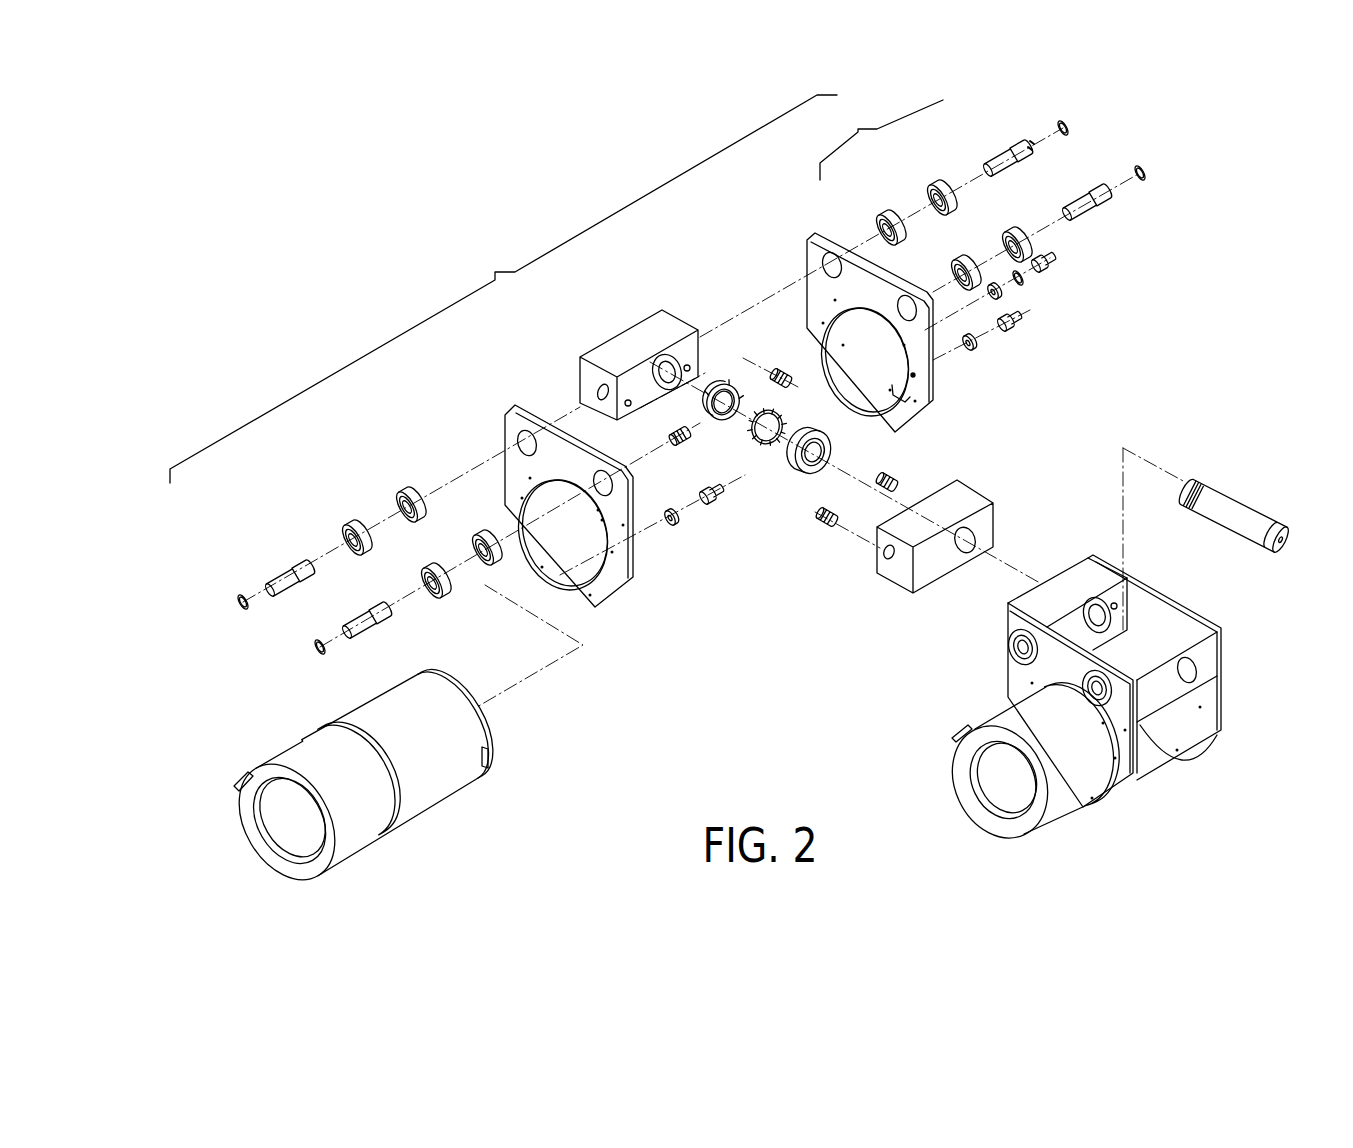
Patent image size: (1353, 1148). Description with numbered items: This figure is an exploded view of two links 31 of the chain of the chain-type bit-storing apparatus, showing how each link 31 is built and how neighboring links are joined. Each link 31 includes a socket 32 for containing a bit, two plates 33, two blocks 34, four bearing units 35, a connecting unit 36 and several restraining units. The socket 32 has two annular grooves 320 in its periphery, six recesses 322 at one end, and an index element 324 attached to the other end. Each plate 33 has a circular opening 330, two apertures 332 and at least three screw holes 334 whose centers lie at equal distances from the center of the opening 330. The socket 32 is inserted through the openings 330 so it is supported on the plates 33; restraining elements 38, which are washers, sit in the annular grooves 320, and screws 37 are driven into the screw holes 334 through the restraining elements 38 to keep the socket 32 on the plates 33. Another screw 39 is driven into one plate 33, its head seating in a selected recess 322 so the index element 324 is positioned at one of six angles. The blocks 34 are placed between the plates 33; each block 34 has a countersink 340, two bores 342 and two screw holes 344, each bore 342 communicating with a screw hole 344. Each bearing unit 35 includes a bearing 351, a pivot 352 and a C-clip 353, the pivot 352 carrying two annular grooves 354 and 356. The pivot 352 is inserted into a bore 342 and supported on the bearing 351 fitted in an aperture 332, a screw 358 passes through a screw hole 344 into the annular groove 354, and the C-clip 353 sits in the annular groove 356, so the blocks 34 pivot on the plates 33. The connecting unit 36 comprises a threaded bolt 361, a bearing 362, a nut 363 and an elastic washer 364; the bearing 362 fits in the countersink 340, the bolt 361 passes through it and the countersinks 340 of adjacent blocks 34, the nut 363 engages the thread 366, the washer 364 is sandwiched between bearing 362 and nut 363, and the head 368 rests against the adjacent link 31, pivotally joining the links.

The link 31 is at (1245, 823).
The socket 32 is at (398, 703).
The annular groove 320 is at (478, 714).
The recess 322 is at (489, 748).
The index element 324 is at (240, 780).
The plate 33 is at (808, 263).
The opening 330 is at (906, 400).
The aperture 332 is at (822, 258).
The screw hole 334 is at (916, 375).
The block 34 is at (636, 335).
The countersink 340 is at (658, 368).
The bore 342 is at (598, 390).
The screw hole 344 is at (688, 365).
The bearing unit 35 is at (881, 140).
The bearing 351 is at (938, 188).
The pivot 352 is at (1020, 157).
The C-clip 353 is at (1068, 130).
The annular groove 354 is at (1000, 160).
The annular groove 356 is at (1027, 143).
The screw 358 is at (782, 372).
The connecting unit 36 is at (795, 528).
The threaded bolt 361 is at (1227, 513).
The bearing 362 is at (831, 448).
The nut 363 is at (717, 420).
The elastic washer 364 is at (760, 447).
The thread 366 is at (1195, 484).
The head 368 is at (1280, 522).
The screw 37 is at (1022, 321).
The restraining element 38 is at (977, 344).
The screw 39 is at (1052, 262).